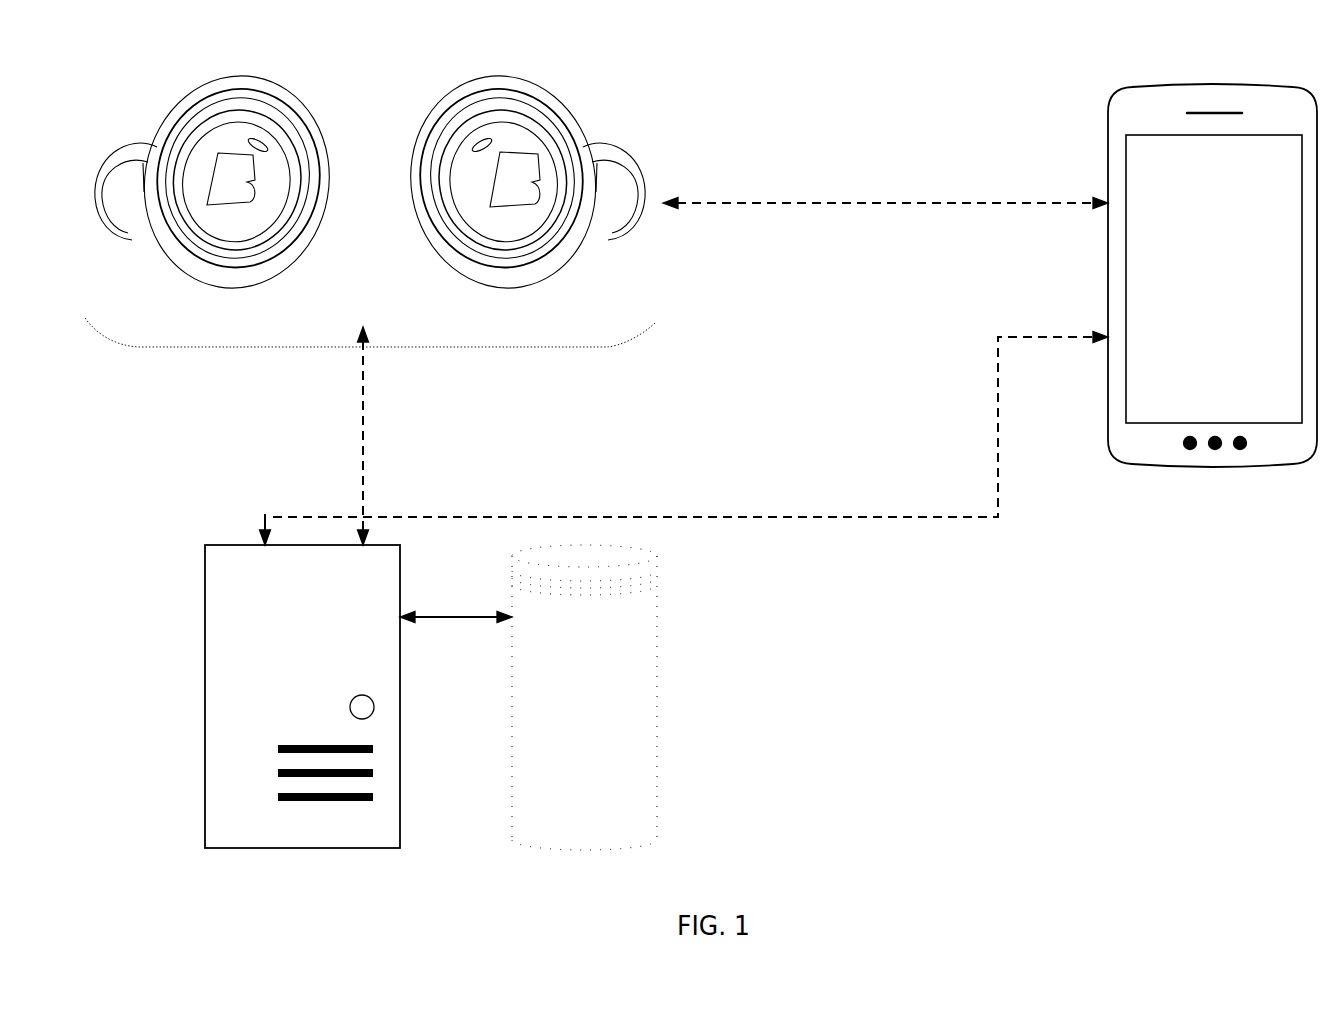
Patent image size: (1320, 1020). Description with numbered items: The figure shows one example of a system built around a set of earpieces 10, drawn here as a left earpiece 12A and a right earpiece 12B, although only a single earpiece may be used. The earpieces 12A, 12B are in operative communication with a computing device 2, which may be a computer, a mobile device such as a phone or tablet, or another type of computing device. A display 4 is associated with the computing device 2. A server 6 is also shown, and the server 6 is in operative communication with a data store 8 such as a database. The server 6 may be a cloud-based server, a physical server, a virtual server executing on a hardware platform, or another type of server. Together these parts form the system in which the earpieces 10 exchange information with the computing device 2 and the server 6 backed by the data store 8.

The computing device 2 is at (1233, 82).
The display 4 is at (1135, 300).
The server 6 is at (297, 558).
The data store 8 is at (630, 617).
The earpieces 10 is at (358, 345).
The left earpiece 12A is at (240, 72).
The right earpiece 12B is at (510, 76).